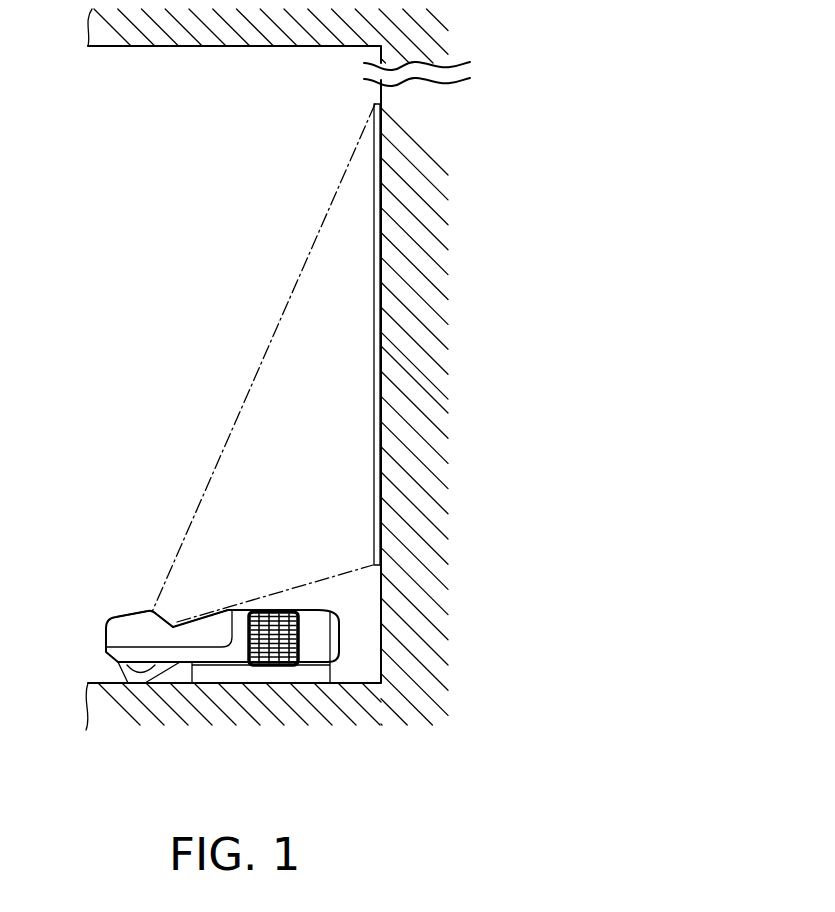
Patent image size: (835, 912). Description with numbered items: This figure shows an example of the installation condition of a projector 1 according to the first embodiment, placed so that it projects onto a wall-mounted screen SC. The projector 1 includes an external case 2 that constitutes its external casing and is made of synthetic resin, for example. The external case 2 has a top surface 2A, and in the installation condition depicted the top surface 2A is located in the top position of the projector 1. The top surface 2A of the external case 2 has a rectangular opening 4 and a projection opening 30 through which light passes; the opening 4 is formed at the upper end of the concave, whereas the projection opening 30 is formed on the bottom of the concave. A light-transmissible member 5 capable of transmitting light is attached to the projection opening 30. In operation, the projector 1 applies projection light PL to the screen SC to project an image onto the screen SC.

The projector 1 is at (100, 611).
The external case 2 is at (106, 636).
The top surface 2A is at (128, 612).
The rectangular opening 4 is at (152, 610).
The projection opening 30 is at (167, 619).
The light-transmissible member 5 is at (164, 620).
The projection light PL is at (260, 328).
The screen SC is at (380, 352).